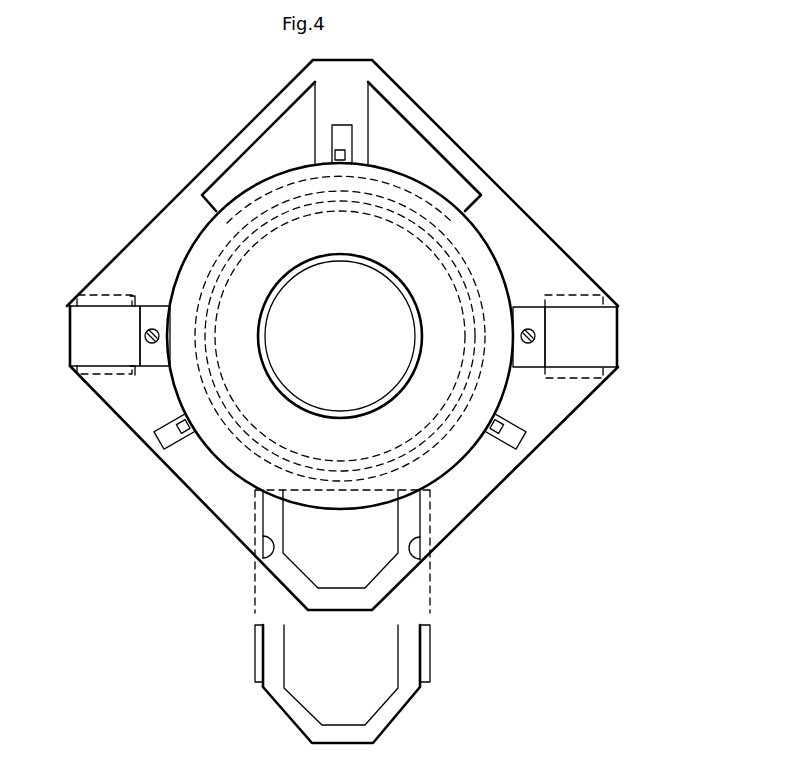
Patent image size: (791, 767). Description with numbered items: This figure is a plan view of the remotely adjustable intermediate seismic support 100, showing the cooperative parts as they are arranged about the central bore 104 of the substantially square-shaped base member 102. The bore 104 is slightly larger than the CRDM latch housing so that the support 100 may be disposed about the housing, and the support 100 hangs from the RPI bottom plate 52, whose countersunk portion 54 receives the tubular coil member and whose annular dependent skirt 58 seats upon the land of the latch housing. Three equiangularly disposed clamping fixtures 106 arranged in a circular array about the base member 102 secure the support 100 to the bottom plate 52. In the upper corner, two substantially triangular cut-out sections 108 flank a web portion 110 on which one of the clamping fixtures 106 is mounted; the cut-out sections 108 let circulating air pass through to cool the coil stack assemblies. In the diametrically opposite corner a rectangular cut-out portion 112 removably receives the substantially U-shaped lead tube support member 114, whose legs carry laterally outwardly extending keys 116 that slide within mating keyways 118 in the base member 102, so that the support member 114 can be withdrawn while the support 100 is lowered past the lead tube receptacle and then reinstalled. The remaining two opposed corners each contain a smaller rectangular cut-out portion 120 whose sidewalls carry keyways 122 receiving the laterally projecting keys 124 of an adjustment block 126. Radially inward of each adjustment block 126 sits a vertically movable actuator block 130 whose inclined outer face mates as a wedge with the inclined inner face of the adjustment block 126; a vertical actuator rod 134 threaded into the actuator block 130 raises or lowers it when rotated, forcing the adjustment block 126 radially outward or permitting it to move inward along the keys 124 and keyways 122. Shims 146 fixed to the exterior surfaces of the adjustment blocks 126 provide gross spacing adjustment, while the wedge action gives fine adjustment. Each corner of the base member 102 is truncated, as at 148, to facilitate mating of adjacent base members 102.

The bottom plate 52 is at (409, 257).
The countersunk portion 54 is at (398, 280).
The annular dependent skirt 58 is at (218, 345).
The intermediate seismic support 100 is at (128, 214).
The base member 102 is at (133, 408).
The central bore 104 is at (213, 270).
The clamping fixtures 106 is at (347, 137).
The triangularly configured cut-out sections 108 is at (268, 145).
The web portion 110 is at (353, 95).
The rectangularly configured cut-out portion 112 is at (263, 557).
The lead tube support member 114 is at (412, 697).
The keys 116 is at (257, 525).
The keyways 118 is at (257, 508).
The cut-out portion 120 is at (98, 365).
The keyways 122 is at (110, 295).
The keys 124 is at (82, 297).
The adjustment blocks 126 is at (117, 337).
The actuator blocks 130 is at (157, 312).
The actuator rod 134 is at (160, 336).
The shims 146 is at (70, 353).
The truncated corner configuration 148 is at (313, 60).